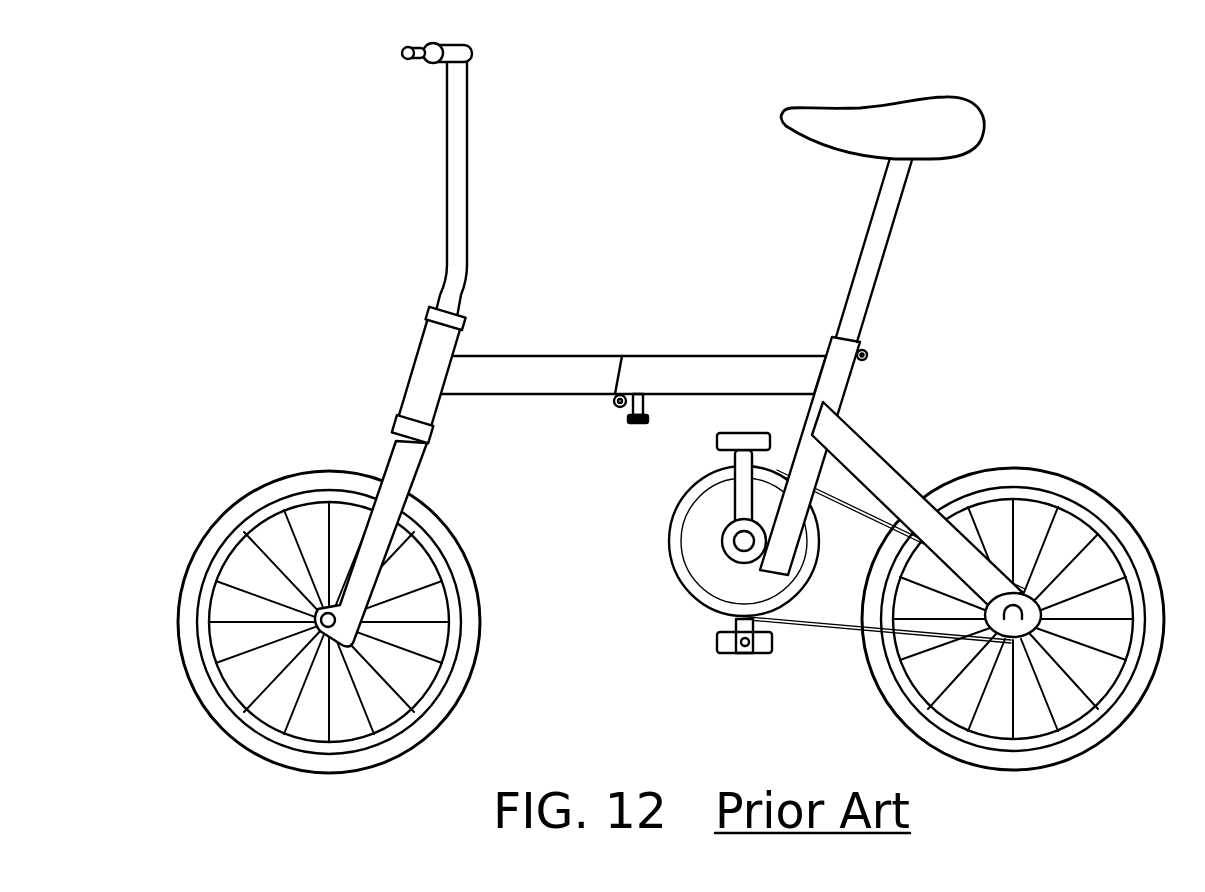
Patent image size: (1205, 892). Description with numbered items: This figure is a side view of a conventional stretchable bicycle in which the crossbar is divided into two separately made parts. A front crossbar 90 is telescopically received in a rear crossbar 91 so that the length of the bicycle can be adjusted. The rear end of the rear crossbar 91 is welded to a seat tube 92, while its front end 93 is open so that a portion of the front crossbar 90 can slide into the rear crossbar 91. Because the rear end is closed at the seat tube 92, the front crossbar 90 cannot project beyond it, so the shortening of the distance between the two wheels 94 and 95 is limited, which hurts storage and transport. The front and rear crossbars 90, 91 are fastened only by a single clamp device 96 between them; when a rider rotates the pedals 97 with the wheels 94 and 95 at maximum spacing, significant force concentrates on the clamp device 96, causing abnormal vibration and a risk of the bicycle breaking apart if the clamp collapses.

The front crossbar 90 is at (527, 362).
The rear crossbar 91 is at (747, 362).
The seat tube 92 is at (837, 385).
The front end 93 is at (622, 373).
The wheel 94 is at (248, 500).
The wheel 95 is at (1068, 483).
The clamp device 96 is at (615, 408).
The pedals 97 is at (722, 646).